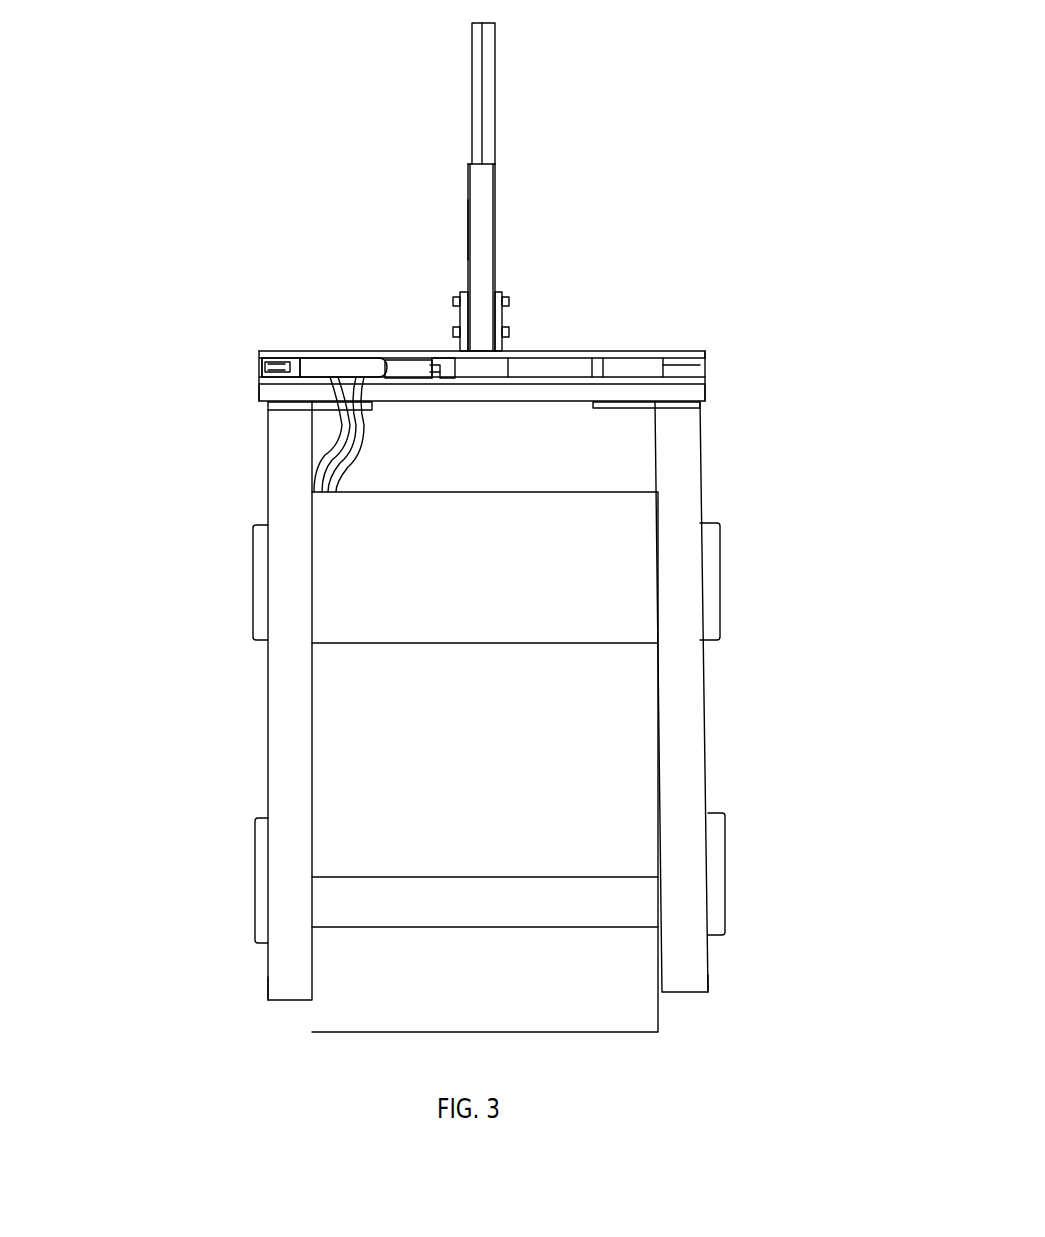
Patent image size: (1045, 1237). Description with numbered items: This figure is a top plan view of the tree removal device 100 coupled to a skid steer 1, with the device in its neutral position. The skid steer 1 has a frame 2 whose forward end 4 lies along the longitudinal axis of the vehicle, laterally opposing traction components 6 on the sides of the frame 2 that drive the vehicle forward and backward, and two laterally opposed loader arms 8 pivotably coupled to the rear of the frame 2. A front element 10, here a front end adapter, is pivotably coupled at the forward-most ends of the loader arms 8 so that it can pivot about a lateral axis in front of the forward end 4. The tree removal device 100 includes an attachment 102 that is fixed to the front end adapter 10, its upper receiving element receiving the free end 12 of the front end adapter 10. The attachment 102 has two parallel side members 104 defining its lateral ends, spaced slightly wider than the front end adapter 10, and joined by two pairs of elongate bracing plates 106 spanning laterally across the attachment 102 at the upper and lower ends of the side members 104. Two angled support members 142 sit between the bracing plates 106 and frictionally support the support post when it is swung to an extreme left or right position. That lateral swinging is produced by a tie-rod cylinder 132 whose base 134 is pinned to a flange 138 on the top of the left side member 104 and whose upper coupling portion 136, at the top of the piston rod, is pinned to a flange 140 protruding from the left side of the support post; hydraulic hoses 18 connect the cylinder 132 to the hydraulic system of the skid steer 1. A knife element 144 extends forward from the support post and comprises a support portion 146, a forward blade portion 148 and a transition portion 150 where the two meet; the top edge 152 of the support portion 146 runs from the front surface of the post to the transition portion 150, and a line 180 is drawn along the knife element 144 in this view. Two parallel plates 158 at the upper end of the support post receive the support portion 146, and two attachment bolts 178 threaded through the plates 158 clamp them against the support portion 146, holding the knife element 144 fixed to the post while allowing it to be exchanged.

The skid steer 1 is at (160, 745).
The frame 2 is at (337, 1011).
The forward end 4 is at (720, 511).
The traction components 6 is at (253, 583).
The loader arms 8 is at (268, 977).
The front element 10 is at (822, 420).
The free end 12 is at (265, 402).
The hydraulic hoses 18 is at (311, 441).
The tree removal device 100 is at (816, 91).
The attachment 102 is at (744, 272).
The side members 104 is at (265, 366).
The bracing plates 106 is at (637, 350).
The tie-rod cylinder 132 is at (338, 336).
The base 134 is at (293, 350).
The upper coupling portion 136 is at (437, 347).
The flange 138 is at (268, 355).
The flange 140 is at (443, 350).
The support members 142 is at (407, 350).
The knife element 144 is at (682, 159).
The support portion 146 is at (553, 207).
The blade portion 148 is at (547, 66).
The transition portion 150 is at (525, 171).
The top edge 152 is at (478, 215).
The parallel plates 158 is at (458, 293).
The attachment bolts 178 is at (509, 301).
The rod center line 180 is at (482, 120).